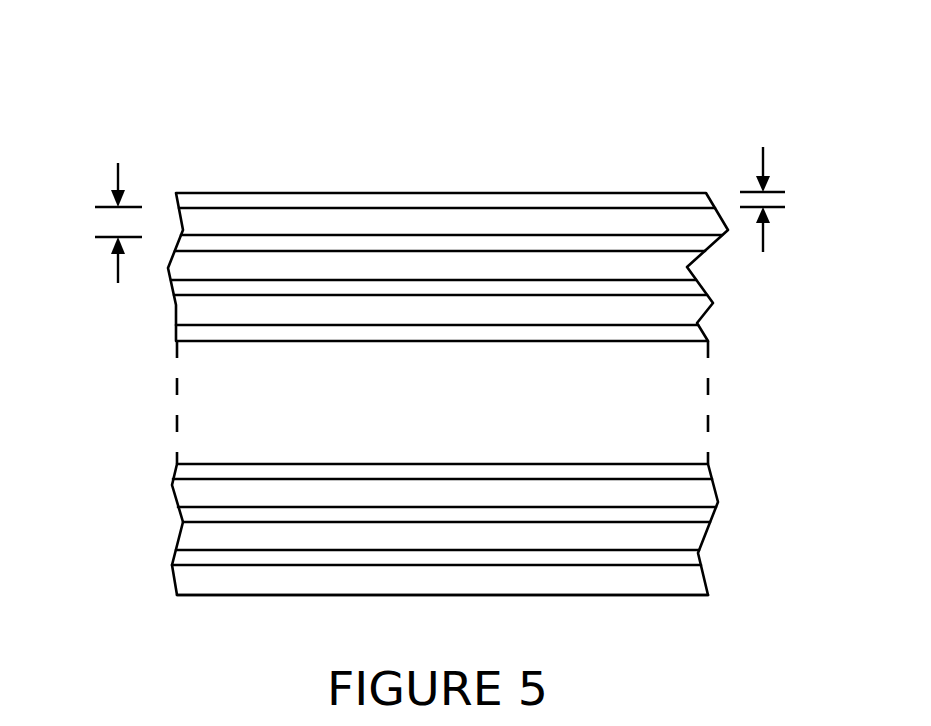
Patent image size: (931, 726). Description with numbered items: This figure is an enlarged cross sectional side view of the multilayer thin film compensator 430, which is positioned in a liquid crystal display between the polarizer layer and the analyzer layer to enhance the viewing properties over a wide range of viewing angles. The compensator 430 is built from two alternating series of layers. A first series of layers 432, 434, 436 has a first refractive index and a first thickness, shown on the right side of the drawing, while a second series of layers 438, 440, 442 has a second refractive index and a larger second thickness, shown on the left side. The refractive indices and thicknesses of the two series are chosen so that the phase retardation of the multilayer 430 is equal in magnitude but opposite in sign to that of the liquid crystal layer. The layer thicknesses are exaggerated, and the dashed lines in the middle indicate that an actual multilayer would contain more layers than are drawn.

The multilayer thin film compensator 430 is at (463, 140).
The layer of the first series 432 is at (686, 558).
The layer of the first series 434 is at (697, 511).
The layer of the first series 436 is at (697, 470).
The layer of the second series 438 is at (187, 580).
The layer of the second series 440 is at (196, 538).
The layer of the second series 442 is at (190, 492).